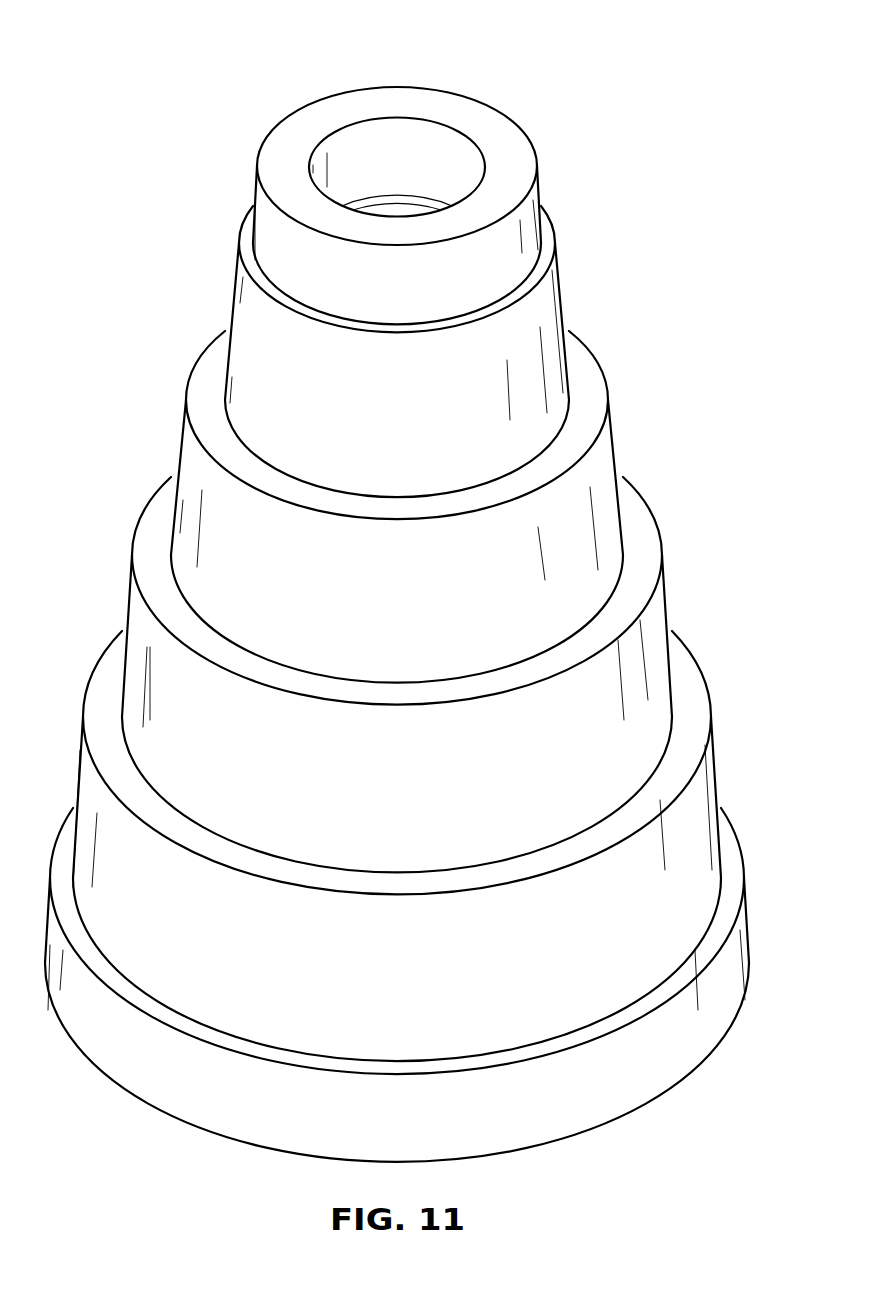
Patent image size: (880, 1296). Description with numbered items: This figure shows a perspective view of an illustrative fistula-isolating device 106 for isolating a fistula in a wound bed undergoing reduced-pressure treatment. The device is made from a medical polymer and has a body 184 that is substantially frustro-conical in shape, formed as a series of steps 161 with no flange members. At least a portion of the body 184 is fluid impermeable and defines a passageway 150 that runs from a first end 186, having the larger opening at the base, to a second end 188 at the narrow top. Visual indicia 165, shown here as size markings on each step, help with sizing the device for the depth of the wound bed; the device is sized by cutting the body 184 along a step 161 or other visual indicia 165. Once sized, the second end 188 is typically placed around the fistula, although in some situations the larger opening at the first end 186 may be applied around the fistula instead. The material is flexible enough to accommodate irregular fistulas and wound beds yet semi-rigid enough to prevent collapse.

The fistula-isolating device 106 is at (397, 596).
The passageway 150 is at (452, 152).
The second end 188 is at (410, 84).
The body 184 is at (184, 458).
The steps 161 is at (632, 530).
The visual indicia 165 is at (272, 407).
The first end 186 is at (641, 1107).